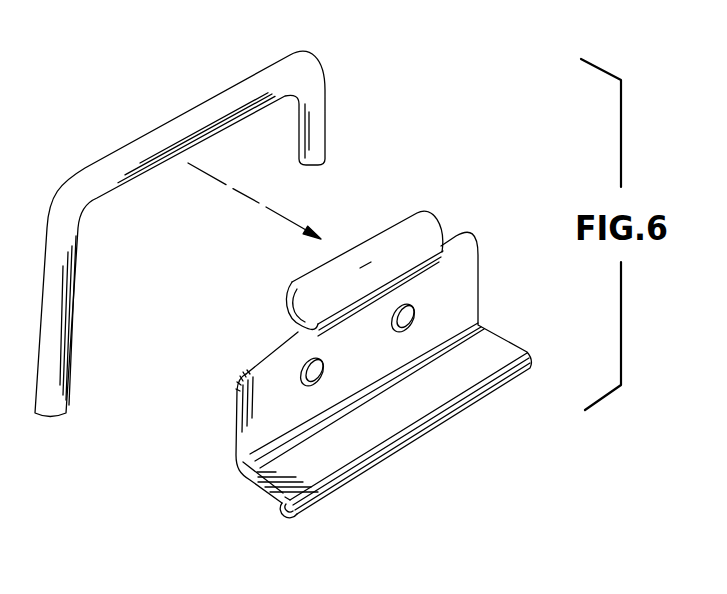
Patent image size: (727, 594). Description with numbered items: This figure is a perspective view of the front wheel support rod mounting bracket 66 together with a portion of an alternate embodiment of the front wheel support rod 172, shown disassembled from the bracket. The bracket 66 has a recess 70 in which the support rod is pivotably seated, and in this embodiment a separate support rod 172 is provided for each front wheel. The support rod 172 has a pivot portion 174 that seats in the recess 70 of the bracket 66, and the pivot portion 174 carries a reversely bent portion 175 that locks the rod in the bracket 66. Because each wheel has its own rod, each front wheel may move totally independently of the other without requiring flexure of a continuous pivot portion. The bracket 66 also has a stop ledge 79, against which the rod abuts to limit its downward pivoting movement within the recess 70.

The support rod 172 is at (227, 76).
The pivot portion 174 is at (153, 137).
The reversely bent portion 175 is at (316, 123).
The bracket 66 is at (222, 434).
The recess 70 is at (291, 316).
The stop ledge 79 is at (279, 506).